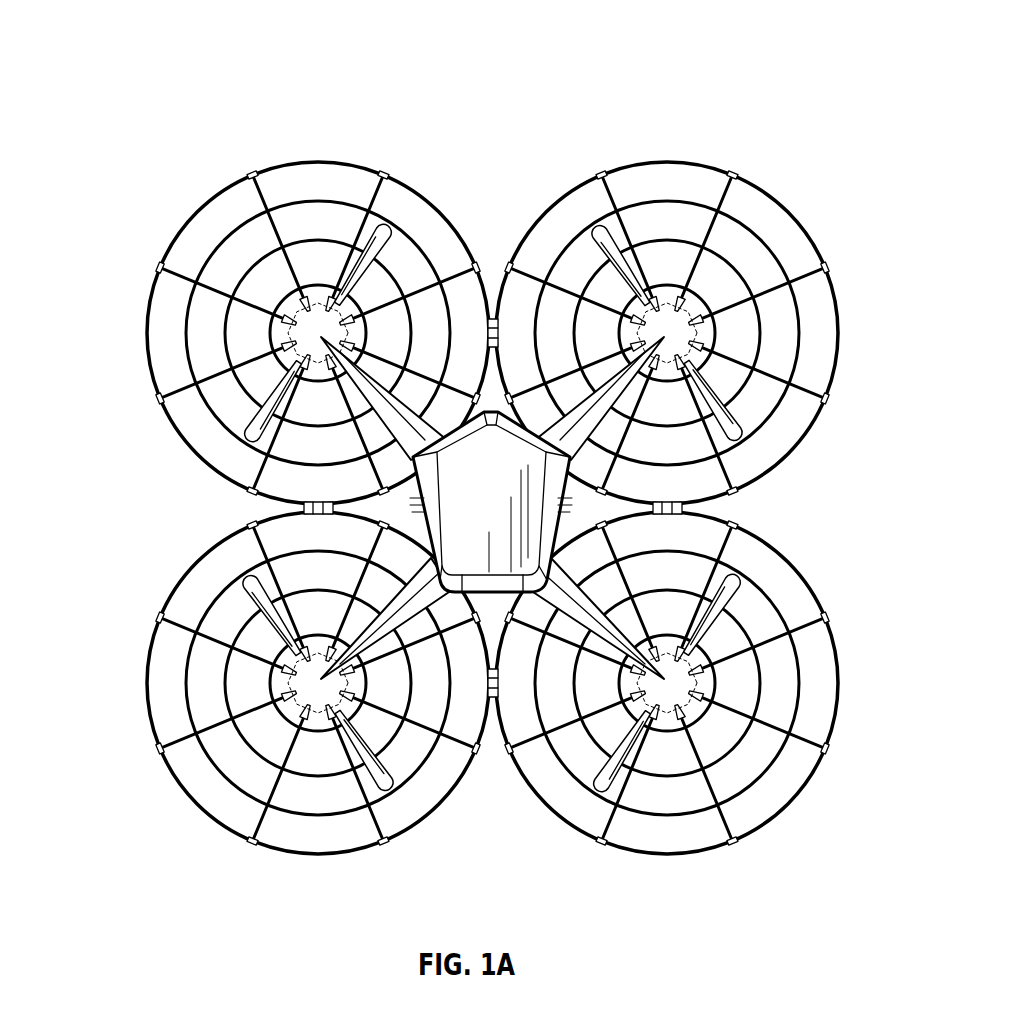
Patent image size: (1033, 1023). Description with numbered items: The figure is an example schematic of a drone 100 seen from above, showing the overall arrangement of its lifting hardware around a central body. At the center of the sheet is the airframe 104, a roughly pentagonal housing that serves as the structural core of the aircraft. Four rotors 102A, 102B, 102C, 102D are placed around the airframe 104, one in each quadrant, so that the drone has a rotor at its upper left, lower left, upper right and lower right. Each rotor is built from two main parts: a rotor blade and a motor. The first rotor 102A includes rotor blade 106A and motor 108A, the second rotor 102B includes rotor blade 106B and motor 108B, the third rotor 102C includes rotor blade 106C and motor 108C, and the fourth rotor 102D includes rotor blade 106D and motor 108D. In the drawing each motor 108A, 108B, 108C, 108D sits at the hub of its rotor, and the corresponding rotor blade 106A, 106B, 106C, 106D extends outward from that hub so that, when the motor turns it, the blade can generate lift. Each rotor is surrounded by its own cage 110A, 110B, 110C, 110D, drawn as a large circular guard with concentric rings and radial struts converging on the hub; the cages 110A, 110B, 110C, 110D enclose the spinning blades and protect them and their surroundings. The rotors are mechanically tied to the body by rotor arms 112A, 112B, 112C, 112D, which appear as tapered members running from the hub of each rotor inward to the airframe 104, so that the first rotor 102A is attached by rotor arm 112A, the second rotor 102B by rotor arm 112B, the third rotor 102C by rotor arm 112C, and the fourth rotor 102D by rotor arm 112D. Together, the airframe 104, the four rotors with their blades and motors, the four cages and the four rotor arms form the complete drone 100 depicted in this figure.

The drone 100 is at (485, 468).
The rotor 102A is at (282, 332).
The rotor 102B is at (269, 709).
The rotor 102C is at (717, 315).
The rotor 102D is at (716, 718).
The airframe 104 is at (620, 570).
The rotor blade 106A is at (390, 222).
The rotor blade 106B is at (390, 797).
The rotor blade 106C is at (742, 448).
The rotor blade 106D is at (593, 795).
The motor 108A is at (288, 325).
The motor 108B is at (292, 673).
The motor 108C is at (692, 340).
The motor 108D is at (700, 682).
The cage 110A is at (144, 332).
The cage 110B is at (145, 692).
The cage 110C is at (840, 336).
The cage 110D is at (840, 690).
The rotor arm 112A is at (413, 400).
The rotor arm 112B is at (440, 752).
The rotor arm 112C is at (608, 367).
The rotor arm 112D is at (520, 762).